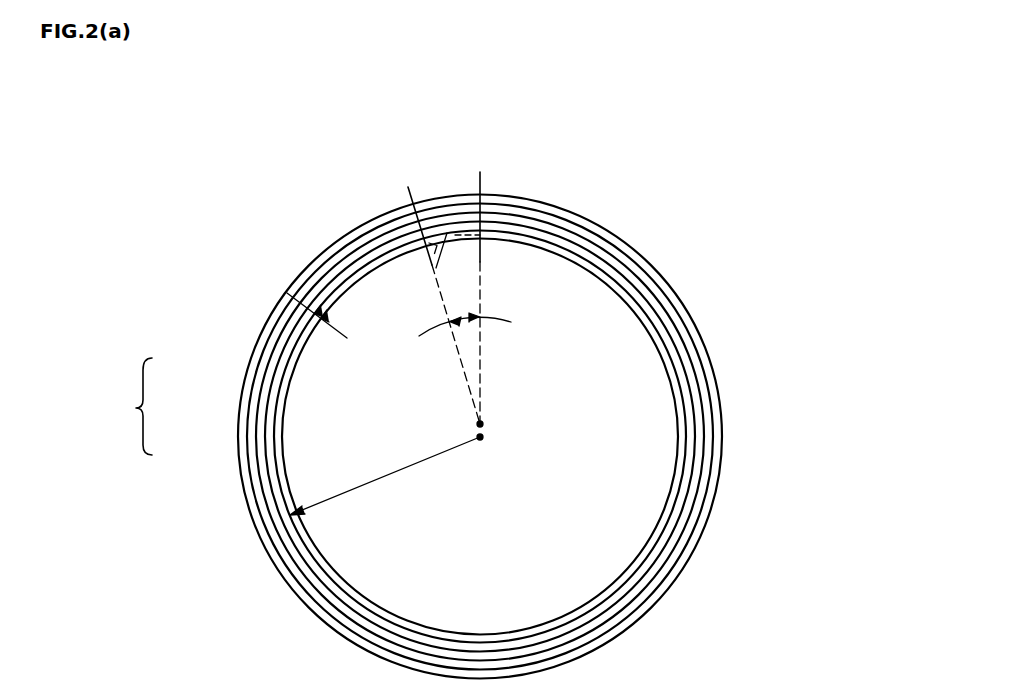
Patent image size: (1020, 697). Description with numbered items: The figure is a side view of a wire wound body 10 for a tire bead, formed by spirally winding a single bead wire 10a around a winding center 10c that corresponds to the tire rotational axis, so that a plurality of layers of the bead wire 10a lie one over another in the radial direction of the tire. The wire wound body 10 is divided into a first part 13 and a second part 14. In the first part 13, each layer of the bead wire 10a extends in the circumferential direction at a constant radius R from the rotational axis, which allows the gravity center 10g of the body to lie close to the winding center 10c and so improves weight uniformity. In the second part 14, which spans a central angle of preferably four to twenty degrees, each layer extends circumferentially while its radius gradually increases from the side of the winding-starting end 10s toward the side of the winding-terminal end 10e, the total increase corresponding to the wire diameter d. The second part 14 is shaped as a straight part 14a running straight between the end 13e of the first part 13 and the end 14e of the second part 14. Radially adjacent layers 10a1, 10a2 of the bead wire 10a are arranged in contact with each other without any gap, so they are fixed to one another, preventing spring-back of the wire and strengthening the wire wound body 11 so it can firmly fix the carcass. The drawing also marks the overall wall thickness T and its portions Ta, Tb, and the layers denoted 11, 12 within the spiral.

The wire wound body 10 is at (480, 351).
The wire wound body 11 is at (685, 352).
The tape layer 12 is at (480, 437).
The first part 13 is at (583, 213).
The second part 14 is at (427, 259).
The straight part 14a is at (441, 250).
The end of the first part 13e is at (386, 248).
The end of the second part 14e is at (490, 228).
The winding-terminal end 10e is at (473, 196).
The winding-starting end 10s is at (490, 232).
The bead wire 10a is at (718, 447).
The radially adjacent layer of bead wire 10a1 is at (650, 312).
The radially adjacent layer of bead wire 10a2 is at (538, 437).
The gravity center 10g is at (482, 423).
The winding center 10c is at (483, 437).
The diameter of the bead wire d is at (314, 312).
The radius R is at (385, 476).
The total thickness T is at (137, 406).
The thickness portion a Ta is at (292, 352).
The thickness portion b Tb is at (447, 234).